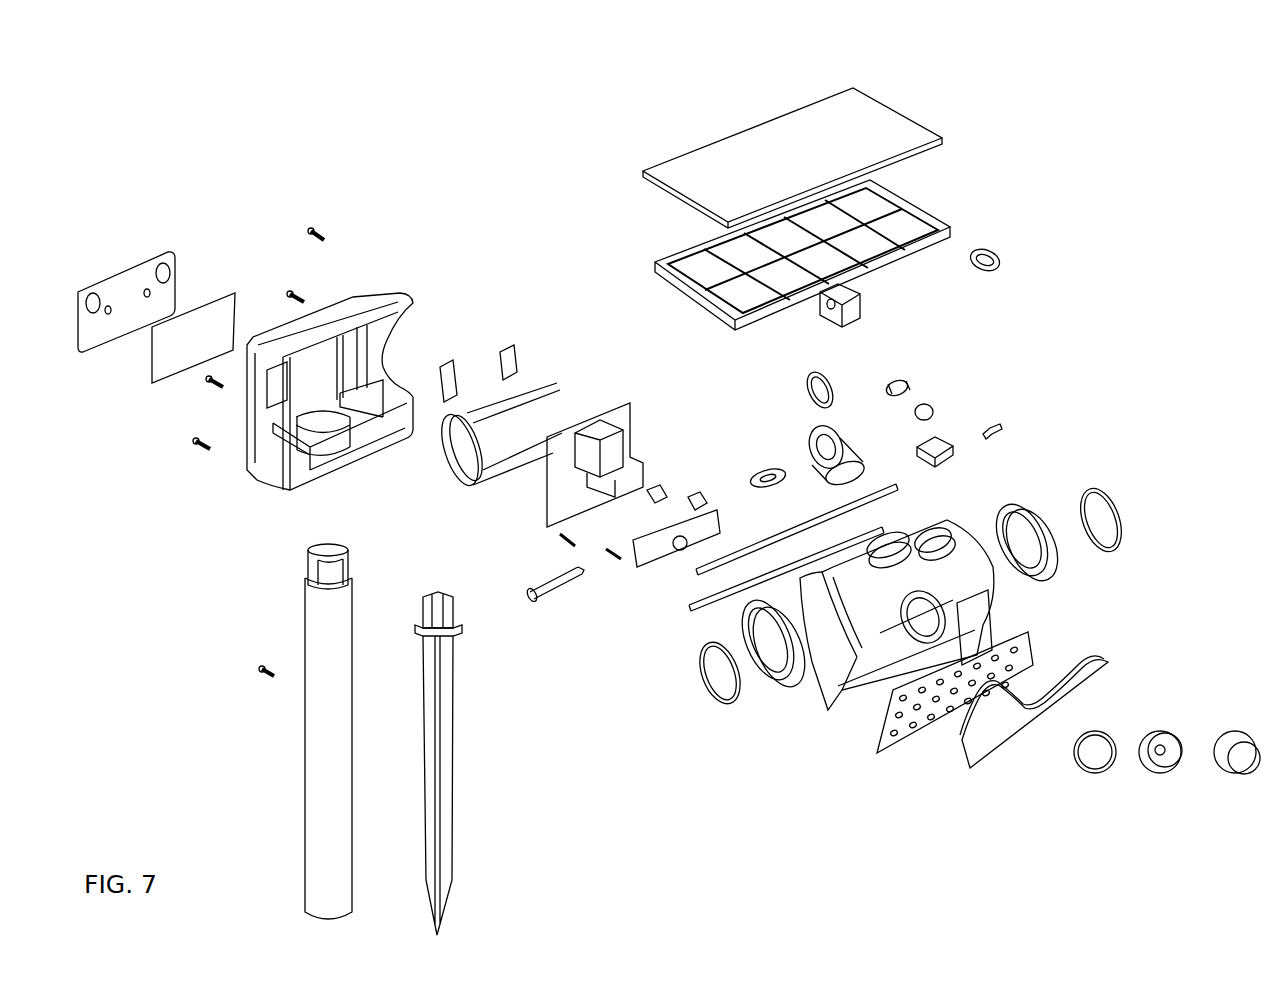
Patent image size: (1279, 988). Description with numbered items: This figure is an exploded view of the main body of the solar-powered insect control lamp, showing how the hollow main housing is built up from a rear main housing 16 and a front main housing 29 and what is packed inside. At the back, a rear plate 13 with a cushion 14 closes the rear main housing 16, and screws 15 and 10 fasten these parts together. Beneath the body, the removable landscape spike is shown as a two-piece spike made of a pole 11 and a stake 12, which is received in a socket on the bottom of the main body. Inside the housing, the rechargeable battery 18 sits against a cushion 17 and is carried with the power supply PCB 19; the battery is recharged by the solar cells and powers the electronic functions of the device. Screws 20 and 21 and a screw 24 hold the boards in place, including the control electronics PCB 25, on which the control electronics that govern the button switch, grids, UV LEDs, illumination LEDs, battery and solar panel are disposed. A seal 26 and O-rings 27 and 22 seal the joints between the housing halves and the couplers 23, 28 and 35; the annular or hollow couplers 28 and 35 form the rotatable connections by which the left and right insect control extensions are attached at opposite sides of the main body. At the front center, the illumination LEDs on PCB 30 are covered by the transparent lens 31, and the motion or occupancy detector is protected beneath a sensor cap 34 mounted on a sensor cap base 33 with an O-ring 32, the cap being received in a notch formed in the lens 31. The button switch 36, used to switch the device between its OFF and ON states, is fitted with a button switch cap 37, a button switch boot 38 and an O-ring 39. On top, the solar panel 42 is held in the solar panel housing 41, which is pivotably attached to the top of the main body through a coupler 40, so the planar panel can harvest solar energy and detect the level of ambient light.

The screw 10 is at (639, 513).
The pole 11 is at (346, 701).
The stake 12 is at (438, 722).
The rear plate 13 is at (126, 256).
The cushion 14 is at (204, 289).
The screw 15 is at (328, 175).
The rear main housing 16 is at (330, 334).
The cushion 17 is at (523, 307).
The rechargeable battery 18 is at (513, 379).
The power supply PCB 19 is at (595, 410).
The screw 20 is at (668, 437).
The screw 21 is at (708, 464).
The O-ring 22 is at (777, 440).
The coupler 23 is at (841, 434).
The screw 24 is at (554, 631).
The control electronics PCB 25 is at (661, 598).
The seal 26 is at (777, 605).
The O-ring 27 is at (916, 613).
The coupler 28 is at (773, 696).
The front main housing 29 is at (894, 674).
The illumination LEDs on PCB 30 is at (946, 749).
The lens 31 is at (1023, 771).
The O-ring 32 is at (1083, 811).
The sensor cap base 33 is at (1148, 811).
The sensor cap 34 is at (1226, 813).
The coupler 35 is at (1033, 511).
The button switch 36 is at (942, 415).
The button switch cap 37 is at (935, 377).
The button switch boot 38 is at (908, 351).
The O-ring 39 is at (833, 363).
The coupler 40 is at (1006, 208).
The solar panel housing 41 is at (820, 218).
The solar panel 42 is at (792, 122).